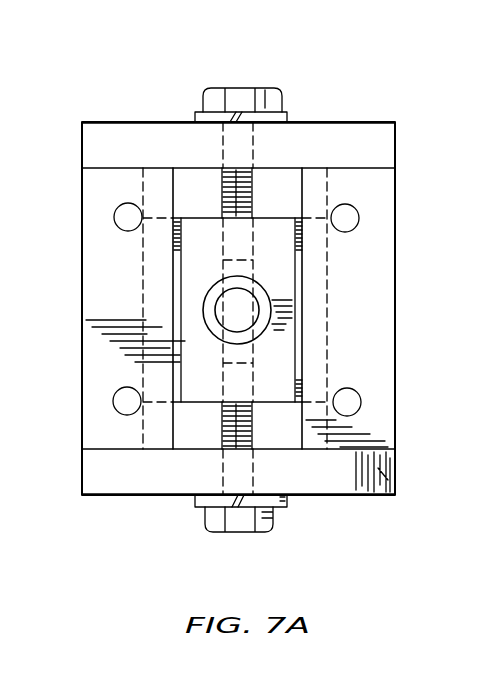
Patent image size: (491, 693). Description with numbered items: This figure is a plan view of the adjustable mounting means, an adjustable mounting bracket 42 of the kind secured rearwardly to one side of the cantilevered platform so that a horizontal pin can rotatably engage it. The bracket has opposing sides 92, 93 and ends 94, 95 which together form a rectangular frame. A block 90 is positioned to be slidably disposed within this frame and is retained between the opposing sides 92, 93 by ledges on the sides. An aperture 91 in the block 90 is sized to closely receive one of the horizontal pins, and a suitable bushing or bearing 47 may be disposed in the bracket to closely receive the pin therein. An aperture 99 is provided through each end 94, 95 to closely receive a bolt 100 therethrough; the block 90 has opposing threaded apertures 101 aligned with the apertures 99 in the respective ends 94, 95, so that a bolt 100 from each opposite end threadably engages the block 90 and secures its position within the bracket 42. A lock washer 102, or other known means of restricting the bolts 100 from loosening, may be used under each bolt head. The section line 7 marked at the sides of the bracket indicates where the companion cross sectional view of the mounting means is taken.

The first mounting bracket 42 is at (365, 98).
The bushing or bearing 47 is at (297, 293).
The block 90 is at (289, 346).
The aperture 91 is at (270, 320).
The opposing side 92 is at (98, 270).
The opposing side 93 is at (370, 202).
The end 94 is at (383, 143).
The end 95 is at (385, 477).
The aperture 99 is at (258, 150).
The bolt 100 is at (262, 95).
The threaded aperture 101 is at (217, 229).
The lock washer 102 is at (200, 118).
The section line 7 is at (80, 360).